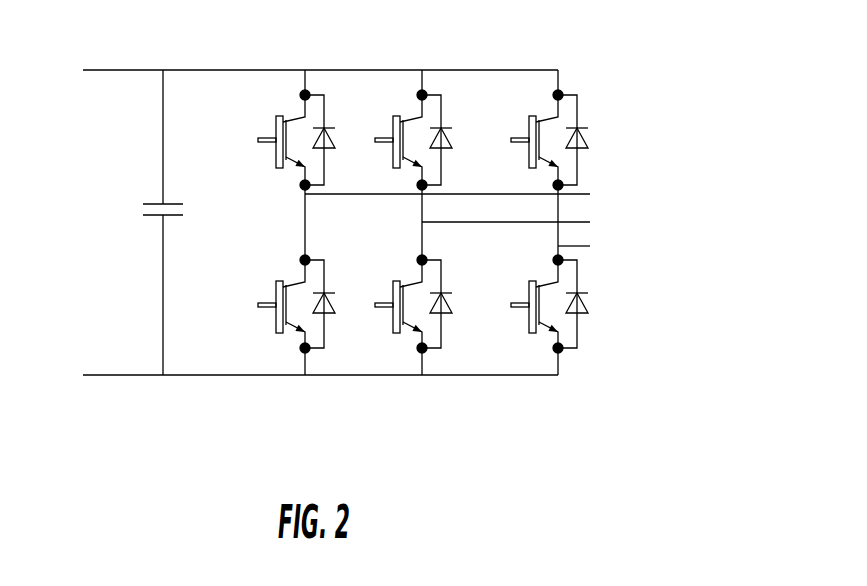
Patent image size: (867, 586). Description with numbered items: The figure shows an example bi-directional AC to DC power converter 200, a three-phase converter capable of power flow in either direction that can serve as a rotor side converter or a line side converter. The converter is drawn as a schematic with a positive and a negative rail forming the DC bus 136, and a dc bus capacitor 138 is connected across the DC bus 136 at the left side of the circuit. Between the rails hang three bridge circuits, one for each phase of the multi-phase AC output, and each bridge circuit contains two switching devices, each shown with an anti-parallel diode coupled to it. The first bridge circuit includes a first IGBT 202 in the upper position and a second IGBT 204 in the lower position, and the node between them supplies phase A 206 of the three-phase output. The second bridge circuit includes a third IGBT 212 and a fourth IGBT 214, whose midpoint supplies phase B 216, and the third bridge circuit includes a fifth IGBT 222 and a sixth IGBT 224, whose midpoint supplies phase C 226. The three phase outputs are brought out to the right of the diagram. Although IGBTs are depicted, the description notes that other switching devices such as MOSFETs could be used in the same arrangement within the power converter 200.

The bi-directional AC to DC power converter 200 is at (672, 79).
The DC bus 136 is at (110, 68).
The dc bus capacitor 138 is at (127, 217).
The first IGBT 202 is at (288, 83).
The second IGBT 204 is at (293, 362).
The third IGBT 212 is at (408, 78).
The fourth IGBT 214 is at (415, 362).
The fifth IGBT 222 is at (547, 82).
The sixth IGBT 224 is at (553, 362).
The phase A 206 is at (665, 193).
The phase B 216 is at (665, 222).
The phase C 226 is at (665, 247).